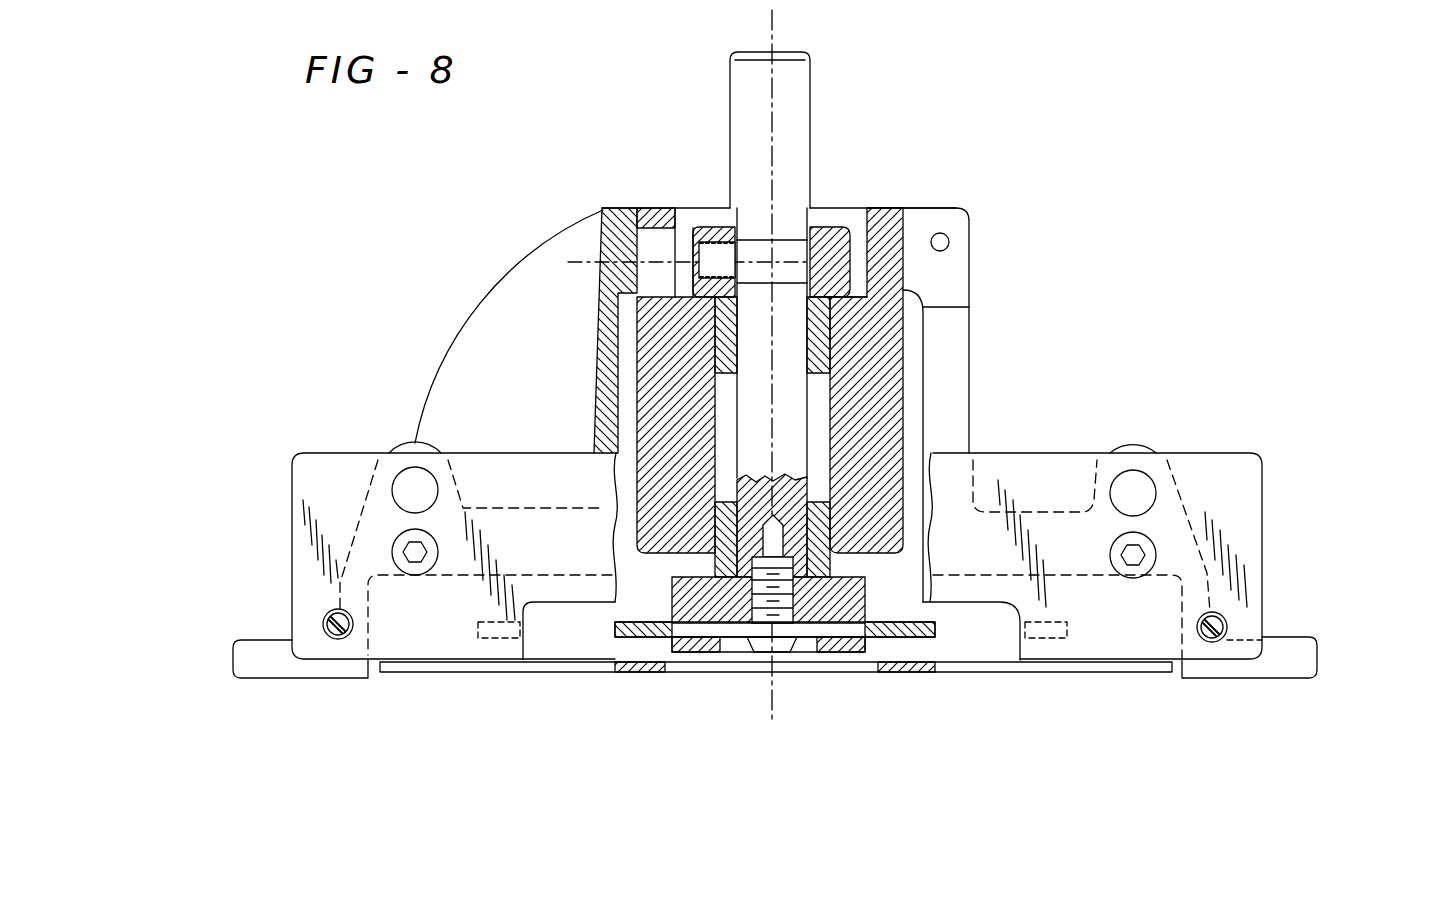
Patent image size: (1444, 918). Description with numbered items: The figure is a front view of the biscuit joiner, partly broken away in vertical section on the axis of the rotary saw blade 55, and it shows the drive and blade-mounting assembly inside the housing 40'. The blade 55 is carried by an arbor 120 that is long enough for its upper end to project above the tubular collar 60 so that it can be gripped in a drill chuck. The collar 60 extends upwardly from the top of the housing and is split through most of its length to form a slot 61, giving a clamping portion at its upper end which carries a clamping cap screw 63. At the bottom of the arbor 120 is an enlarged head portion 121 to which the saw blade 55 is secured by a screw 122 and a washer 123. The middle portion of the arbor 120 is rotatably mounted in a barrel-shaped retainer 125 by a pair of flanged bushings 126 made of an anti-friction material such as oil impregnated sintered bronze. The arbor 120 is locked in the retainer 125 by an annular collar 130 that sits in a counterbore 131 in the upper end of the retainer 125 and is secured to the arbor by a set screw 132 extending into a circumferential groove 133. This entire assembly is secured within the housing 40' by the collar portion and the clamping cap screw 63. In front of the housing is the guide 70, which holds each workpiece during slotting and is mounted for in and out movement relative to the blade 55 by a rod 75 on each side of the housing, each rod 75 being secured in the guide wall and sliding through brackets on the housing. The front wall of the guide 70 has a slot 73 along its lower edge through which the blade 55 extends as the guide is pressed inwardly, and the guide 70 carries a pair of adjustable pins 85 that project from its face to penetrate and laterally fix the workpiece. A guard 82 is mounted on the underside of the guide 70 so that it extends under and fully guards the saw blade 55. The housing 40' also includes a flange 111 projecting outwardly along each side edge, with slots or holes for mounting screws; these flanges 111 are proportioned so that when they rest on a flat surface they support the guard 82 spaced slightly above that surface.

The arbor 120 is at (797, 123).
The annular collar 130 is at (842, 228).
The counterbore 131 is at (707, 205).
The set screw 132 is at (703, 253).
The circumferential groove 133 is at (603, 212).
The clamping cap screw 63 is at (950, 240).
The slot 61 is at (950, 358).
The tubular collar 60 is at (597, 415).
The barrel-shaped retainer 125 is at (890, 423).
The flanged bushings 126 is at (717, 360).
The rod 75 is at (412, 485).
The guide 70 is at (330, 470).
The adjustable pins 85 is at (323, 627).
The flange 111 is at (250, 657).
The slot 73 is at (555, 602).
The enlarged head portion 121 is at (640, 638).
The washer 123 is at (703, 650).
The screw 122 is at (783, 643).
The rotary saw blade 55 is at (920, 637).
The guard 82 is at (1068, 663).
The housing 40' is at (489, 326).